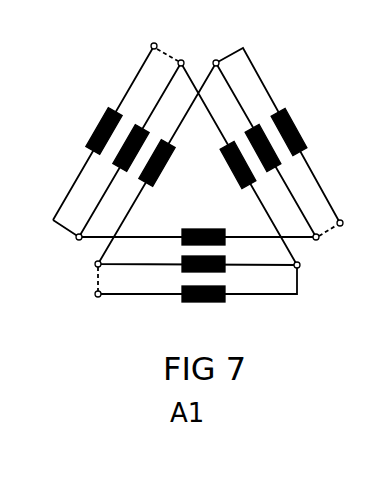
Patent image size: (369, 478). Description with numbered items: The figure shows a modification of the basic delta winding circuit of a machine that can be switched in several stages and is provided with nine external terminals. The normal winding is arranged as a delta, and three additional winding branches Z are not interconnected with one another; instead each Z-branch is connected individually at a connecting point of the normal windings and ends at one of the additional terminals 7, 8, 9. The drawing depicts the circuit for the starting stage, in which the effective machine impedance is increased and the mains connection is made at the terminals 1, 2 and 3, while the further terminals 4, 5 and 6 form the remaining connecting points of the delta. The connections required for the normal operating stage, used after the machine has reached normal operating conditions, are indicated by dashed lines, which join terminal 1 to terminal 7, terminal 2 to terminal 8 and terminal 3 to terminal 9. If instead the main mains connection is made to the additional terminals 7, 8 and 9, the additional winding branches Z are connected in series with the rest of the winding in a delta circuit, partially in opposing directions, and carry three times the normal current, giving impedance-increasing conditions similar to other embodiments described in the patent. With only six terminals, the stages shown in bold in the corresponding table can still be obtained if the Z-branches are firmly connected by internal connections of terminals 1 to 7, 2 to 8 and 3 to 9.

The terminal 1 is at (181, 60).
The terminal 2 is at (319, 240).
The terminal 3 is at (95, 264).
The terminal 4 is at (216, 60).
The terminal 5 is at (300, 267).
The terminal 6 is at (77, 240).
The additional terminal 7 is at (154, 43).
The additional terminal 8 is at (343, 221).
The additional terminal 9 is at (95, 294).
The additional winding branch Z is at (100, 116).